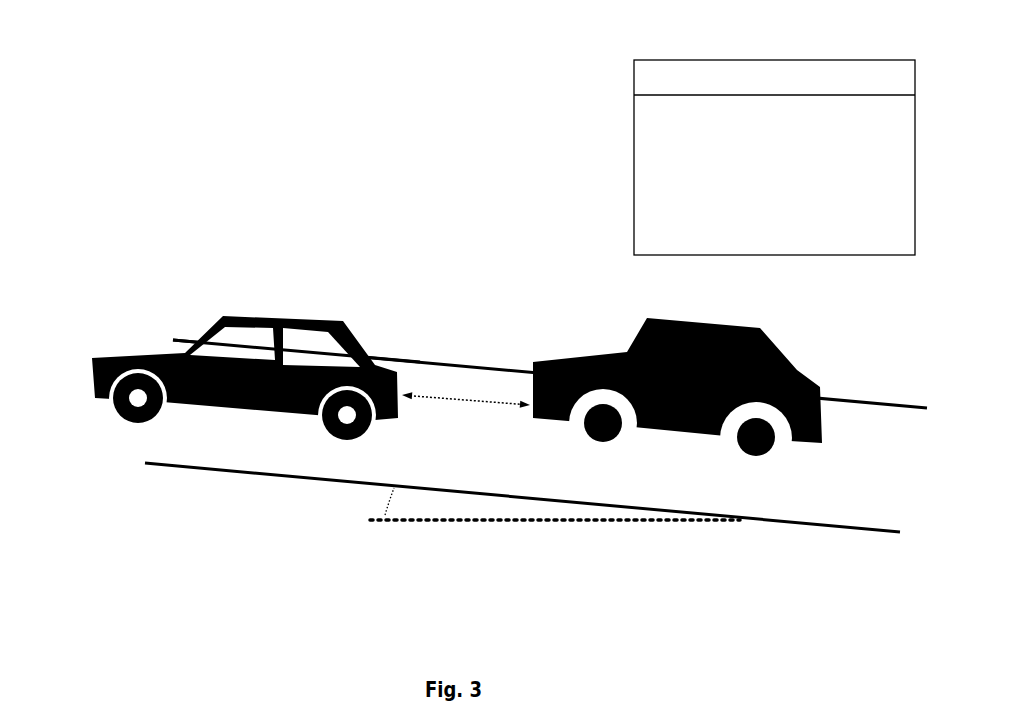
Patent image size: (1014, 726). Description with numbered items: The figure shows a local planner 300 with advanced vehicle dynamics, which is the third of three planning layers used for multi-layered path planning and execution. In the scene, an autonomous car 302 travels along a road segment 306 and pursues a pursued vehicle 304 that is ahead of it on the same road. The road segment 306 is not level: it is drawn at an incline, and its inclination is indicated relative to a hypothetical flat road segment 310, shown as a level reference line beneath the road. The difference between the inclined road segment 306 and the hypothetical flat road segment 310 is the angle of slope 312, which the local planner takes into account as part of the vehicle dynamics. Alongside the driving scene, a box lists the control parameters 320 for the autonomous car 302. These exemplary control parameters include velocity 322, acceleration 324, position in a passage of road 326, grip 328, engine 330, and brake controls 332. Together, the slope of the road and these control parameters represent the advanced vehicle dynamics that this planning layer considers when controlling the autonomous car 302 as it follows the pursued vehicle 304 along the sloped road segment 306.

The local planner with advanced vehicle dynamics 300 is at (396, 86).
The autonomous car 302 is at (872, 340).
The pursued vehicle 304 is at (208, 302).
The road segment 306 is at (202, 437).
The hypothetical flat road segment 310 is at (620, 522).
The angle of slope 312 is at (385, 508).
The control parameters 320 is at (774, 157).
The velocity 322 is at (688, 114).
The acceleration 324 is at (804, 114).
The position in a passage of road 326 is at (738, 151).
The grip 328 is at (676, 187).
The engine 330 is at (759, 187).
The brake controls 332 is at (711, 226).